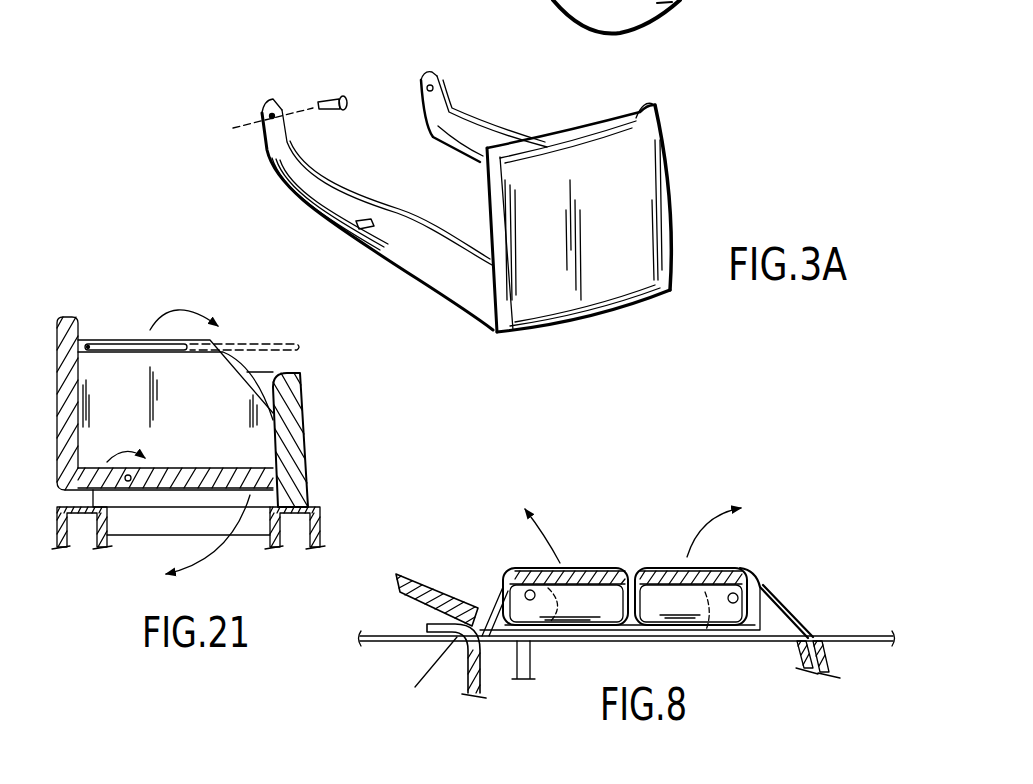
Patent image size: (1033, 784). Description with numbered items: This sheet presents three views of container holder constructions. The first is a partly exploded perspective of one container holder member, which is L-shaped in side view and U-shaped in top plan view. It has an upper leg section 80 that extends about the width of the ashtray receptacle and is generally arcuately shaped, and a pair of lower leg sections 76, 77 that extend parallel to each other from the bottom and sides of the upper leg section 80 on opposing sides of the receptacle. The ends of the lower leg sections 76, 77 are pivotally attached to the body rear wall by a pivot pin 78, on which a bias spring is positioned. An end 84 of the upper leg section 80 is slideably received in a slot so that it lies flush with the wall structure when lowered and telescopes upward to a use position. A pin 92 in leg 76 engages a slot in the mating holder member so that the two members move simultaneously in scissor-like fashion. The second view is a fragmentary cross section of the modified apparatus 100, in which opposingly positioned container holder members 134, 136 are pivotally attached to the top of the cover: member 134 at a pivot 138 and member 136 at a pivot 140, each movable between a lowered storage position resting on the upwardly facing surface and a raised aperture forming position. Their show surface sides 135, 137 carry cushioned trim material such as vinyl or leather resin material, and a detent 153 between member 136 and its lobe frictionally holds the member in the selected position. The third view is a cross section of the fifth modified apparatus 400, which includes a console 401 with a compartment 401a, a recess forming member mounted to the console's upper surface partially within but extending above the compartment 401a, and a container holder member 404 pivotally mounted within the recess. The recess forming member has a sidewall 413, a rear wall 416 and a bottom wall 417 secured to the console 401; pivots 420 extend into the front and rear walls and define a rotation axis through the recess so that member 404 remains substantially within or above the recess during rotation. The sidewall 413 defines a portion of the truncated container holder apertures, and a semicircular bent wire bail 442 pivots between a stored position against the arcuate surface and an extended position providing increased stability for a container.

In FIG. 3A, the lower leg section 76 is at (403, 213).
In FIG. 3A, the lower leg section 77 is at (493, 123).
In FIG. 3A, the pivot pin 78 is at (328, 97).
In FIG. 3A, the upper leg section 80 is at (672, 193).
In FIG. 3A, the end of upper leg section 84 is at (632, 116).
In FIG. 3A, the pin 92 is at (357, 217).
In FIG. 21, the fifth modified apparatus 400 is at (309, 339).
In FIG. 21, the console 401 is at (322, 522).
In FIG. 21, the compartment 401a is at (252, 548).
In FIG. 21, the container holder member 404 is at (63, 314).
In FIG. 21, the sidewall 413 is at (309, 443).
In FIG. 21, the rear wall 416 is at (280, 370).
In FIG. 21, the bottom wall 417 is at (132, 525).
In FIG. 21, the pivots 420 is at (150, 477).
In FIG. 21, the bail 442 is at (122, 344).
In FIG. 8, the modified apparatus 100 is at (820, 470).
In FIG. 8, the container holder member 134 is at (659, 561).
In FIG. 8, the show surface side 135 is at (717, 567).
In FIG. 8, the container holder member 136 is at (609, 561).
In FIG. 8, the show surface side 137 is at (572, 568).
In FIG. 8, the pivot 138 is at (738, 597).
In FIG. 8, the pivot 140 is at (530, 590).
In FIG. 8, the detent 153 is at (545, 613).